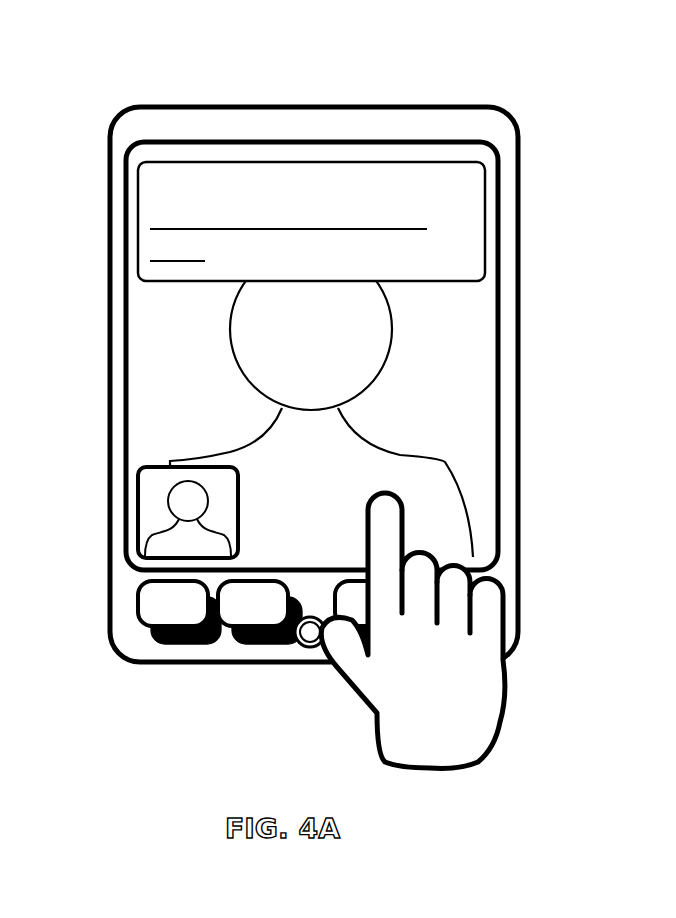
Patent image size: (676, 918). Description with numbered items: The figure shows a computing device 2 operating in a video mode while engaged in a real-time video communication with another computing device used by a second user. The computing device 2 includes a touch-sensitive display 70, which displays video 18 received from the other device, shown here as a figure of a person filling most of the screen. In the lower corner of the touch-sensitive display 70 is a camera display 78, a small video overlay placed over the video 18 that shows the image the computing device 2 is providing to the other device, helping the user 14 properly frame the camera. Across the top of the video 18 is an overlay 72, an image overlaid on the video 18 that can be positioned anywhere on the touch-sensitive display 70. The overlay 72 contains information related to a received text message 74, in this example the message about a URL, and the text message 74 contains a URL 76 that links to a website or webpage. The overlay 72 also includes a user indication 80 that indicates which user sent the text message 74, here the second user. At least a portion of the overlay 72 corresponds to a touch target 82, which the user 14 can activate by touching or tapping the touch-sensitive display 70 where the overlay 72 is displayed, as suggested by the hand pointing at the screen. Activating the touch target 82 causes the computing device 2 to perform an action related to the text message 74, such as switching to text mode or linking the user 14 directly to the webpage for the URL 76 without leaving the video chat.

The computing device 2 is at (236, 107).
The user 14 is at (447, 721).
The video 18 is at (468, 465).
The touch-sensitive display 70 is at (498, 355).
The overlay 72 is at (485, 220).
The text message 74 is at (358, 248).
The URL 76 is at (176, 272).
The camera display 78 is at (140, 558).
The user indication 80 is at (179, 168).
The touch target 82 is at (442, 187).